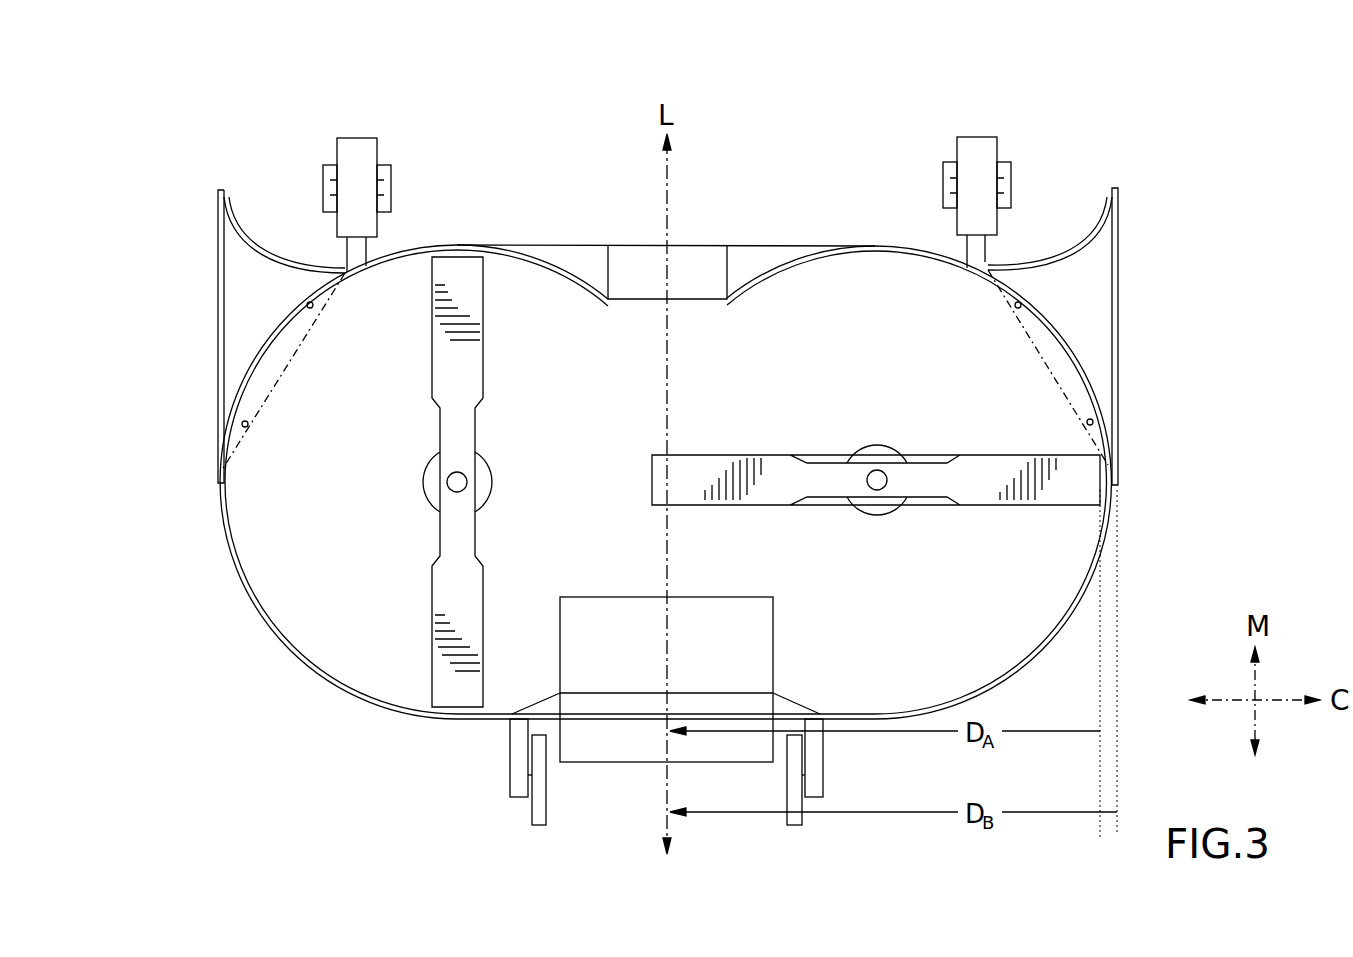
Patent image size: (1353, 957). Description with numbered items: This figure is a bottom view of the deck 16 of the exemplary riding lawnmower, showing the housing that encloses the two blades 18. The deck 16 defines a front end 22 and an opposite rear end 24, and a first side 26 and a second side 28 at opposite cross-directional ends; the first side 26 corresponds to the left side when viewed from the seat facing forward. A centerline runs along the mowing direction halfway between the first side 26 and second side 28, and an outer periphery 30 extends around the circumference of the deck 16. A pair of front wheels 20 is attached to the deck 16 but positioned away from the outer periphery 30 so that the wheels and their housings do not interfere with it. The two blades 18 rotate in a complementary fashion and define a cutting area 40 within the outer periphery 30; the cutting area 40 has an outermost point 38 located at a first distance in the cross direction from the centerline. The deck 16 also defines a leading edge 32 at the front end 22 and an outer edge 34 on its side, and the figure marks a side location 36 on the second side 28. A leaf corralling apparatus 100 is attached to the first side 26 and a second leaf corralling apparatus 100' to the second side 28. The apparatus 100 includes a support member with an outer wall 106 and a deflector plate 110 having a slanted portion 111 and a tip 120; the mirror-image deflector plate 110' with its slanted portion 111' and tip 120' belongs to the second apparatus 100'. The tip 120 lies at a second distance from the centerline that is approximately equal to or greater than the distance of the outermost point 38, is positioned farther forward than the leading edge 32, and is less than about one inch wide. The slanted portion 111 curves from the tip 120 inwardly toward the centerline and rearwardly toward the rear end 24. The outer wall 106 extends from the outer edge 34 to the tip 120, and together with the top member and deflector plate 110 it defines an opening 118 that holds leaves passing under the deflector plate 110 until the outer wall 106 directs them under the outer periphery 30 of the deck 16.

The deck 16 is at (137, 147).
The blade 18 is at (735, 470).
The front wheel 20 is at (360, 145).
The front end 22 is at (697, 217).
The rear end 24 is at (480, 765).
The first side 26 is at (1225, 480).
The second side 28 is at (120, 510).
The outer periphery 30 is at (528, 243).
The leading edge 32 is at (746, 243).
The outer edge 34 is at (1112, 470).
The side edge 36 is at (218, 492).
The outermost point 38 is at (1094, 483).
The cutting area 40 is at (568, 395).
The leaf corralling apparatus 100 is at (1259, 233).
The second leaf corralling apparatus 100' is at (95, 273).
The outer wall 106 is at (1119, 258).
The deflector plate 110 is at (1050, 282).
The deflector plate 110' is at (283, 299).
The slanted portion 111 is at (1105, 150).
The slanted portion 111' is at (259, 159).
The opening 118 is at (1089, 313).
The tip 120 is at (1158, 286).
The tip 120' is at (199, 273).